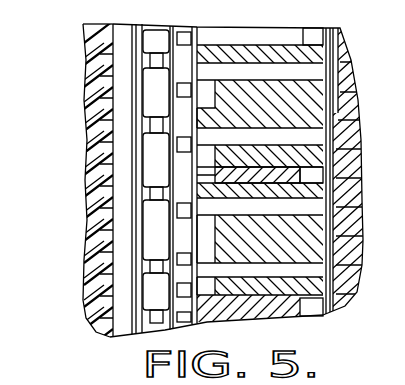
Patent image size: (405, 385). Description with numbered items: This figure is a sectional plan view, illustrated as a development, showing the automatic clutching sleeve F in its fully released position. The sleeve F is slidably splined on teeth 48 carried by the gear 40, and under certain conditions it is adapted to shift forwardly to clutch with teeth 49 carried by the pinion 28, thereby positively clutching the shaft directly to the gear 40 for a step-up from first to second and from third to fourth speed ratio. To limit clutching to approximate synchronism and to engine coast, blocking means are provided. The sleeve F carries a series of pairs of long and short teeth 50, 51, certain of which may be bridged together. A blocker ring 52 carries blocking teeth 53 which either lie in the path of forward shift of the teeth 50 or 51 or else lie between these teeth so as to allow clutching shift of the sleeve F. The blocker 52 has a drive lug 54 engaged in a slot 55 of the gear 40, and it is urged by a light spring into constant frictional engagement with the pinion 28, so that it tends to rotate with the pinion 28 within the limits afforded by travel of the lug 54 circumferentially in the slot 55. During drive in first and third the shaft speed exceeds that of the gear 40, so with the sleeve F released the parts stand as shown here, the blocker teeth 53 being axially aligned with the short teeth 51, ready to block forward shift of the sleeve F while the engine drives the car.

The pinion 28 is at (83, 143).
The gear 40 is at (343, 142).
The teeth 48 is at (287, 180).
The teeth 49 is at (160, 48).
The long teeth 50 is at (200, 118).
The short teeth 51 is at (227, 83).
The blocker ring 52 is at (192, 26).
The blocking teeth 53 is at (192, 78).
The drive lug 54 is at (220, 173).
The slot 55 is at (197, 157).
The plug body P is at (337, 100).